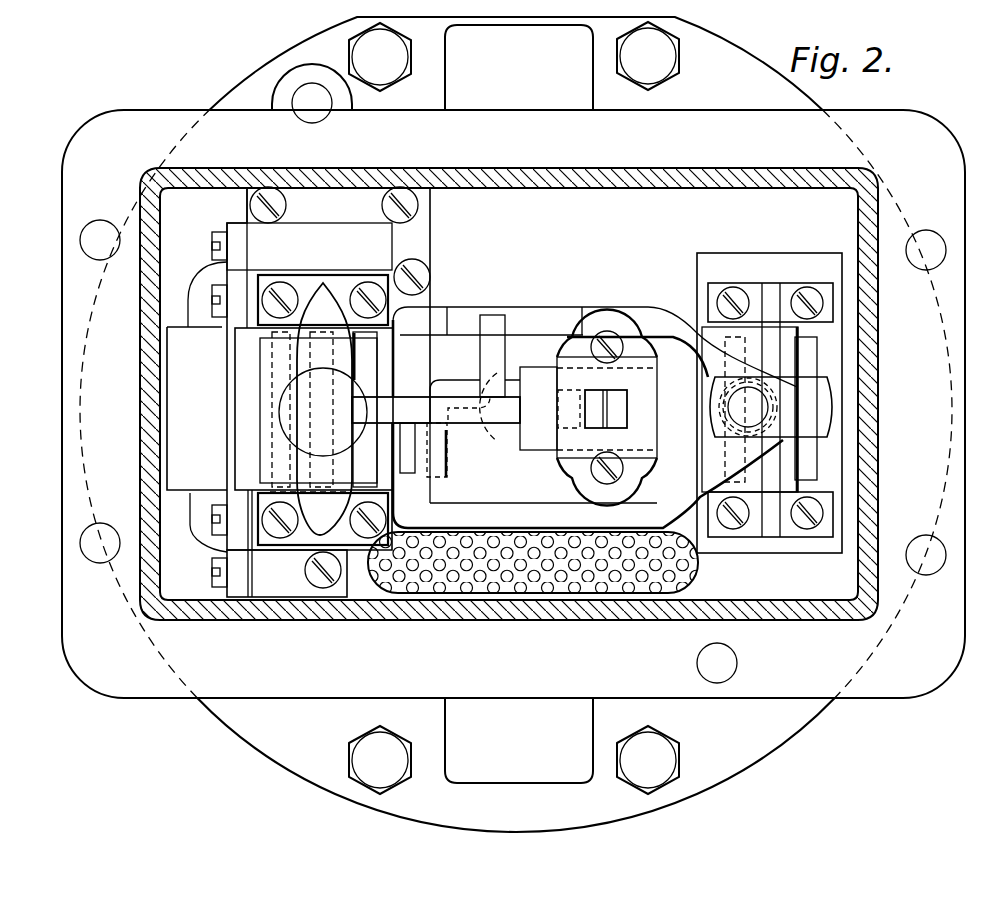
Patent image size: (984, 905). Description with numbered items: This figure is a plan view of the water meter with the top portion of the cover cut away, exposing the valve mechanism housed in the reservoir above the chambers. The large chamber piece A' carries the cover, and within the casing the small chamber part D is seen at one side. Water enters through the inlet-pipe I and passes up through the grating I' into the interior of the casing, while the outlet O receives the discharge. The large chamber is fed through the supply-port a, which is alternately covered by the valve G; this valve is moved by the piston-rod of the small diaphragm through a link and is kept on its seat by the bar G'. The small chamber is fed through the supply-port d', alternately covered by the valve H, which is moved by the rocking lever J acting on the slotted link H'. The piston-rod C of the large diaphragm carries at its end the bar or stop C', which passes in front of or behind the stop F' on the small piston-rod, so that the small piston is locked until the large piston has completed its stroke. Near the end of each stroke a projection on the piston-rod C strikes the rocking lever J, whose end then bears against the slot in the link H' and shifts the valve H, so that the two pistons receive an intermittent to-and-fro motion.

The large chamber piece A' is at (512, 424).
The outlet O is at (519, 67).
The inlet-pipe I is at (519, 740).
The small chamber part D is at (197, 409).
The valve H is at (328, 392).
The supply-port d' is at (365, 409).
The link H' is at (436, 410).
The stop F' is at (406, 448).
The bar or stop C' is at (439, 450).
The piston-rod C is at (480, 409).
The rocking lever J is at (572, 400).
The valve G is at (769, 403).
The supply-port a is at (806, 408).
The bar G' is at (771, 407).
The grating I' is at (533, 562).